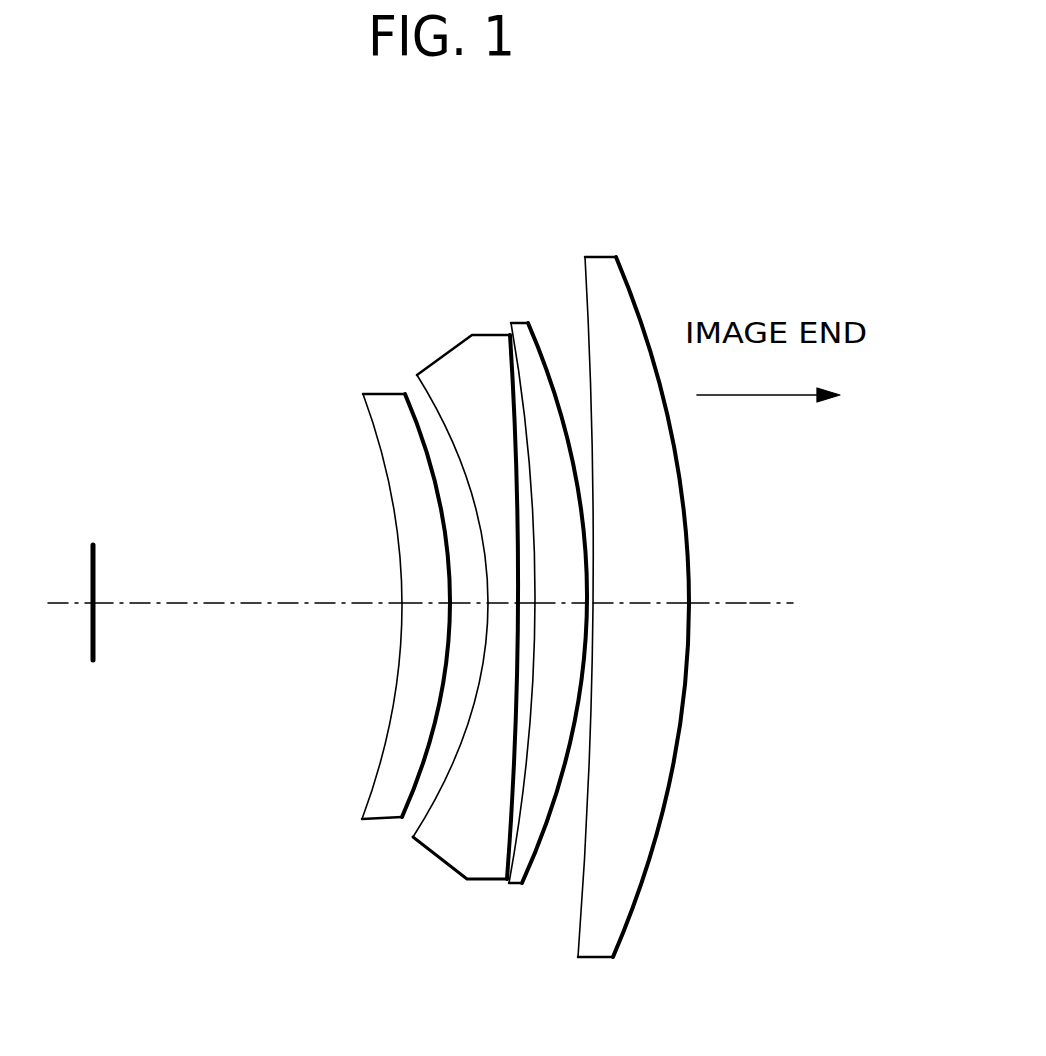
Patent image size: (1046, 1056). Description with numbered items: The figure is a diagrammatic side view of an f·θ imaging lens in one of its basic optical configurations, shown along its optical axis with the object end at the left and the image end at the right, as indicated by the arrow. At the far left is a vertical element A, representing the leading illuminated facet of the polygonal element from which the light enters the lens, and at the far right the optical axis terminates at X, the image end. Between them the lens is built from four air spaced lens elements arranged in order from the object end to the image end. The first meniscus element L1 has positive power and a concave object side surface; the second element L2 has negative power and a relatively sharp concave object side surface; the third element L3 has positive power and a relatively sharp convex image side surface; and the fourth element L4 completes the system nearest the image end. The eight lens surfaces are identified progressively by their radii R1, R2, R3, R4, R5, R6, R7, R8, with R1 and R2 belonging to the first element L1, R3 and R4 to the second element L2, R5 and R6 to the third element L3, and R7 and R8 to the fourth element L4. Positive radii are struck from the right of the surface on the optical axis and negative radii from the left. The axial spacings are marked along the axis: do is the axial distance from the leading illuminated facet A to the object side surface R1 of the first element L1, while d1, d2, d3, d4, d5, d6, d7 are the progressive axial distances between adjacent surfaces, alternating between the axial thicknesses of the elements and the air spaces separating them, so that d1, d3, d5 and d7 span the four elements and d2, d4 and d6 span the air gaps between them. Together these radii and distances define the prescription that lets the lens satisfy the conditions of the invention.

The aperture stop A is at (98, 628).
The image plane X is at (785, 607).
The first meniscus element L1 is at (344, 608).
The second element L2 is at (418, 588).
The third element L3 is at (502, 607).
The fourth element L4 is at (594, 588).
The lens surface radius R1 is at (367, 420).
The lens surface radius R2 is at (403, 403).
The lens surface radius R3 is at (417, 387).
The lens surface radius R4 is at (472, 337).
The lens surface radius R5 is at (507, 403).
The lens surface radius R6 is at (528, 350).
The lens surface radius R7 is at (583, 266).
The lens surface radius R8 is at (624, 274).
The axial distance do is at (223, 598).
The axial distance d1 is at (420, 603).
The axial distance d2 is at (468, 603).
The axial distance d3 is at (503, 603).
The axial distance d4 is at (532, 603).
The axial distance d5 is at (558, 603).
The axial distance d6 is at (673, 605).
The axial distance d7 is at (745, 605).